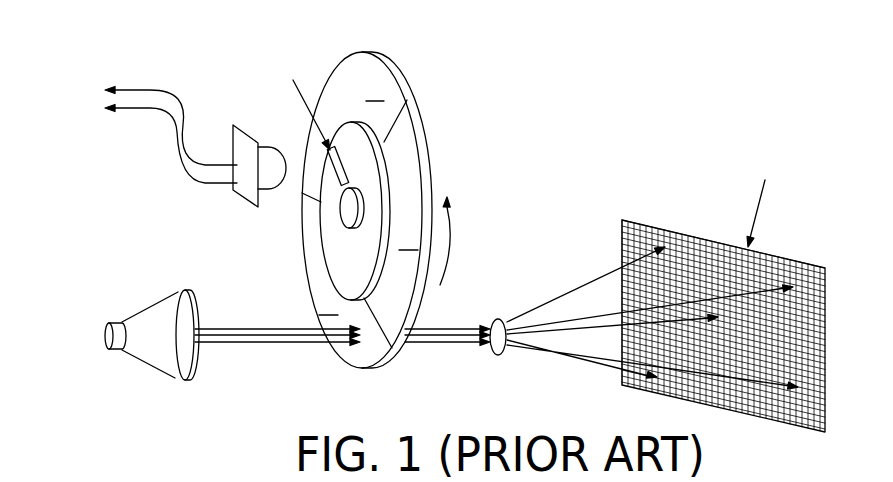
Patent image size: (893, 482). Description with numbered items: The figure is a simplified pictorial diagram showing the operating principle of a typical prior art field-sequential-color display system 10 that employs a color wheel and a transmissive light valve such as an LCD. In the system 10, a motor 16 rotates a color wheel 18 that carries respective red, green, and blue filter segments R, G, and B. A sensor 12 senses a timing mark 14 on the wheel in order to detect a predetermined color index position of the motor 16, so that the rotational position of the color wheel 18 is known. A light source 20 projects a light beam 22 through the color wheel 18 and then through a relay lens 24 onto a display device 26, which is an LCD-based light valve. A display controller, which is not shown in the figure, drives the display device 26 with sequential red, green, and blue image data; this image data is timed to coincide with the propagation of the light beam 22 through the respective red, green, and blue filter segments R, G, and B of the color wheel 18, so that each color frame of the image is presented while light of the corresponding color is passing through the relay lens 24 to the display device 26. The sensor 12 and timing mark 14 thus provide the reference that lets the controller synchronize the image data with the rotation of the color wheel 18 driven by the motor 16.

The FSC display system 10 is at (636, 113).
The sensor 12 is at (270, 160).
The timing mark 14 is at (347, 172).
The motor 16 is at (338, 248).
The color wheel 18 is at (412, 93).
The light source 20 is at (156, 320).
The light beam 22 is at (425, 345).
The relay lens 24 is at (493, 319).
The display device 26 is at (722, 268).